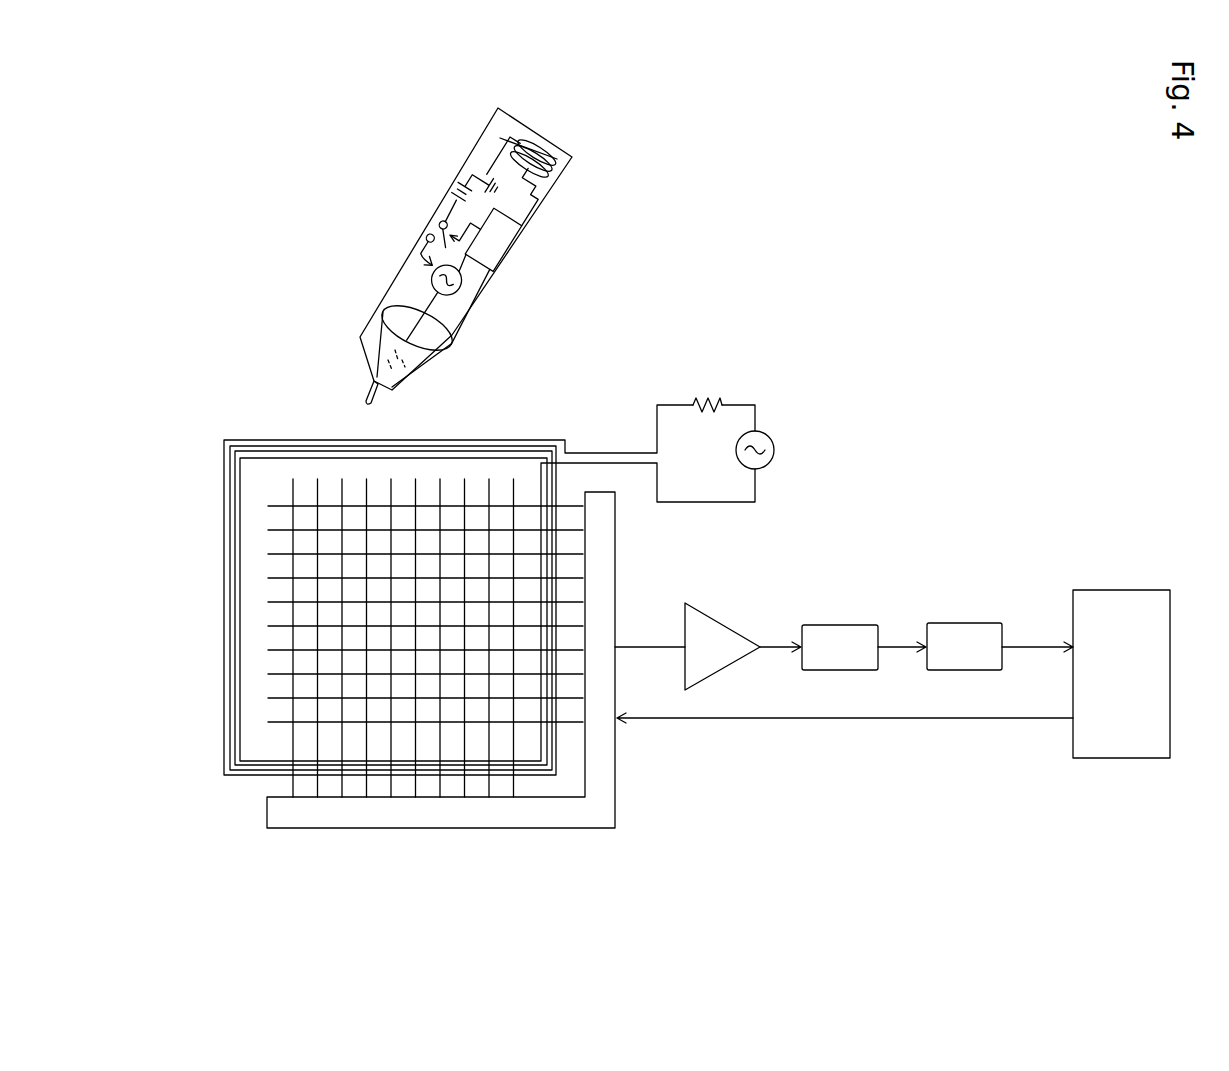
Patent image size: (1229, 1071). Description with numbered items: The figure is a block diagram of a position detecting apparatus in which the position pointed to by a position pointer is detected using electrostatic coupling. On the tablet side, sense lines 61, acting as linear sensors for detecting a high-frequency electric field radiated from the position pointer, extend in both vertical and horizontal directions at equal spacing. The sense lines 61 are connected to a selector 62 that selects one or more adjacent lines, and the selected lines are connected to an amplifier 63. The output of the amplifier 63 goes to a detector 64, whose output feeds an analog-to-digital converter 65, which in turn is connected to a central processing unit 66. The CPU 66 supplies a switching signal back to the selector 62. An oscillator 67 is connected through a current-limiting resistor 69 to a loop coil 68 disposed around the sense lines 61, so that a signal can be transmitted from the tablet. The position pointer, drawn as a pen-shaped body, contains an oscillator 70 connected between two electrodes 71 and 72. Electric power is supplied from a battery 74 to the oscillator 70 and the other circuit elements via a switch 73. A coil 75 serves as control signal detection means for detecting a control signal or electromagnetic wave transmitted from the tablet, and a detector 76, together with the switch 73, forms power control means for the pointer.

The sense lines 61 is at (282, 683).
The selector 62 is at (612, 562).
The amplifier 63 is at (745, 631).
The detector 64 is at (848, 624).
The analog-to-digital converter 65 is at (962, 623).
The central processing unit 66 is at (1133, 590).
The oscillator 67 is at (775, 447).
The loop coil 68 is at (224, 522).
The current-limiting resistor 69 is at (710, 395).
The oscillator 70 is at (428, 282).
The electrode 71 is at (370, 393).
The electrode 72 is at (433, 357).
The switch 73 is at (432, 223).
The battery 74 is at (445, 192).
The coil 75 is at (497, 140).
The detector 76 is at (517, 243).